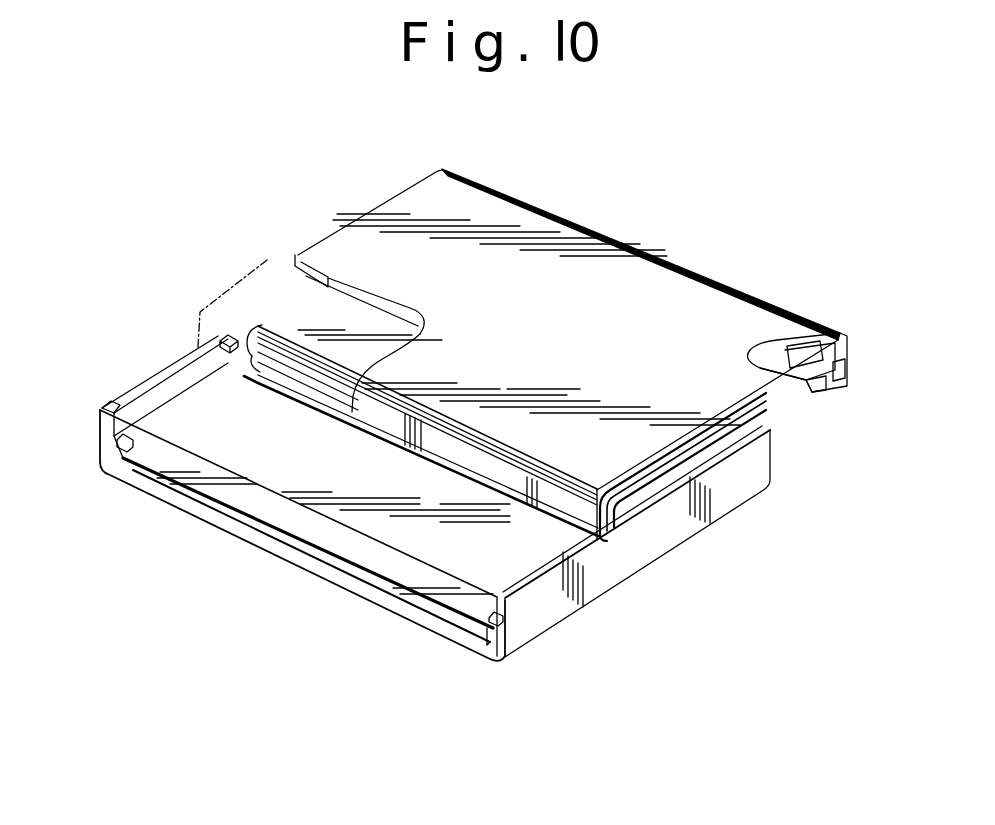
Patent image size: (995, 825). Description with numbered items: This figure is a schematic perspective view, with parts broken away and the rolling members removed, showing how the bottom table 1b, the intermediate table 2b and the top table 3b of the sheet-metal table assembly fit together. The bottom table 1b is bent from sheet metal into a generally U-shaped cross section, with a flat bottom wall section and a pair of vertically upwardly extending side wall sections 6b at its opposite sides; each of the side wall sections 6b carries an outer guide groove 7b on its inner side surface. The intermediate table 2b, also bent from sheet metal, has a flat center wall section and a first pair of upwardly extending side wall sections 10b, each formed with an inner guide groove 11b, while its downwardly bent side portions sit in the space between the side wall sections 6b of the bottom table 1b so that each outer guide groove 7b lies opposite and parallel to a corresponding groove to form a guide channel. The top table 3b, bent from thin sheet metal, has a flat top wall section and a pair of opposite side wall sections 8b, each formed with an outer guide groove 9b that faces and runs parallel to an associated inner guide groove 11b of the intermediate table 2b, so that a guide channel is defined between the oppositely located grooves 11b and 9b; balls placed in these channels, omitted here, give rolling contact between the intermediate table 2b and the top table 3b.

The bottom table 1b is at (443, 630).
The intermediate table 2b is at (347, 325).
The top table 3b is at (613, 240).
The side wall sections 6b is at (100, 425).
The outer guide groove 7b is at (143, 413).
The side wall sections 8b is at (198, 320).
The outer guide groove 9b is at (835, 366).
The upwardly extending side wall sections 10b is at (287, 377).
The inner guide groove 11b is at (337, 388).